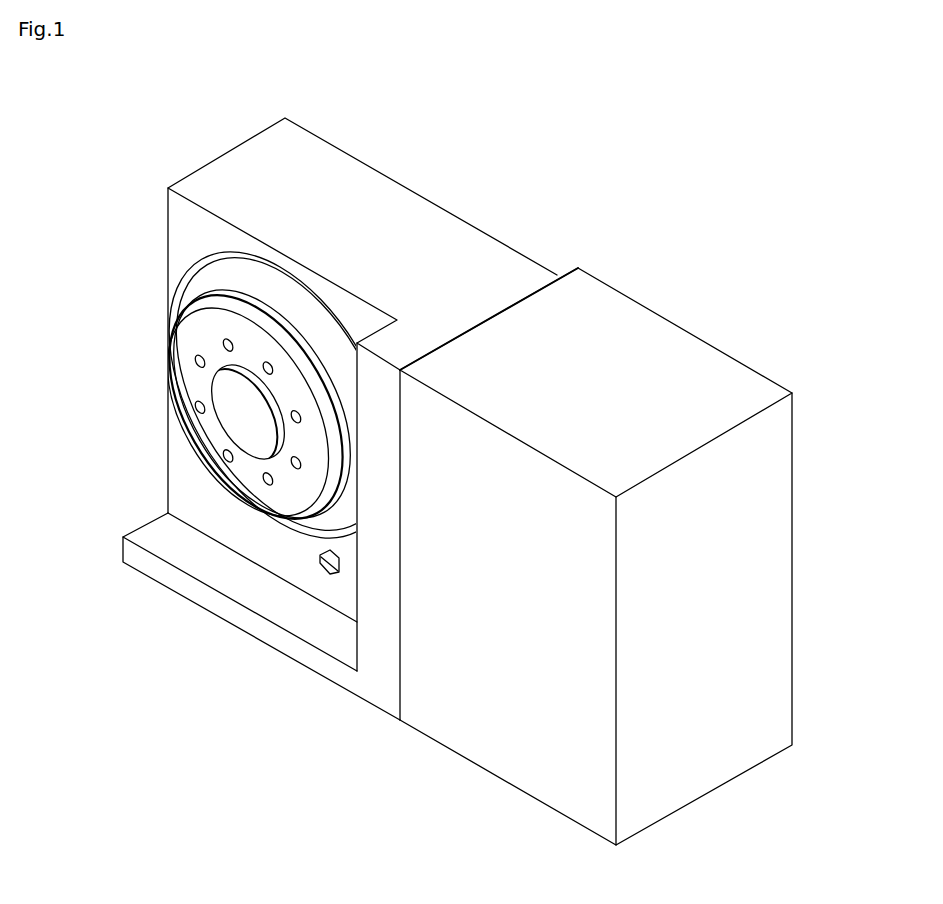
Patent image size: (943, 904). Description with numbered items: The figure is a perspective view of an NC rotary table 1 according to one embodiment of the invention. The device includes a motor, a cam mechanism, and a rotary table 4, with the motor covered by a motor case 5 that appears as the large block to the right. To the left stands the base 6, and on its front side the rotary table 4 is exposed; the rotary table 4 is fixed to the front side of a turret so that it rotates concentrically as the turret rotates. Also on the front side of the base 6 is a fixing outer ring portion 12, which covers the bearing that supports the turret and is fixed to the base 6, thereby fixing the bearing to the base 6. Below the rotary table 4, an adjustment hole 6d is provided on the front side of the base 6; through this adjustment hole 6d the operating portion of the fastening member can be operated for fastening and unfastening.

The NC rotary table 1 is at (780, 233).
The rotary table 4 is at (192, 413).
The motor case 5 is at (772, 565).
The base 6 is at (402, 197).
The adjustment hole 6d is at (322, 576).
The fixing outer ring portion 12 is at (190, 290).